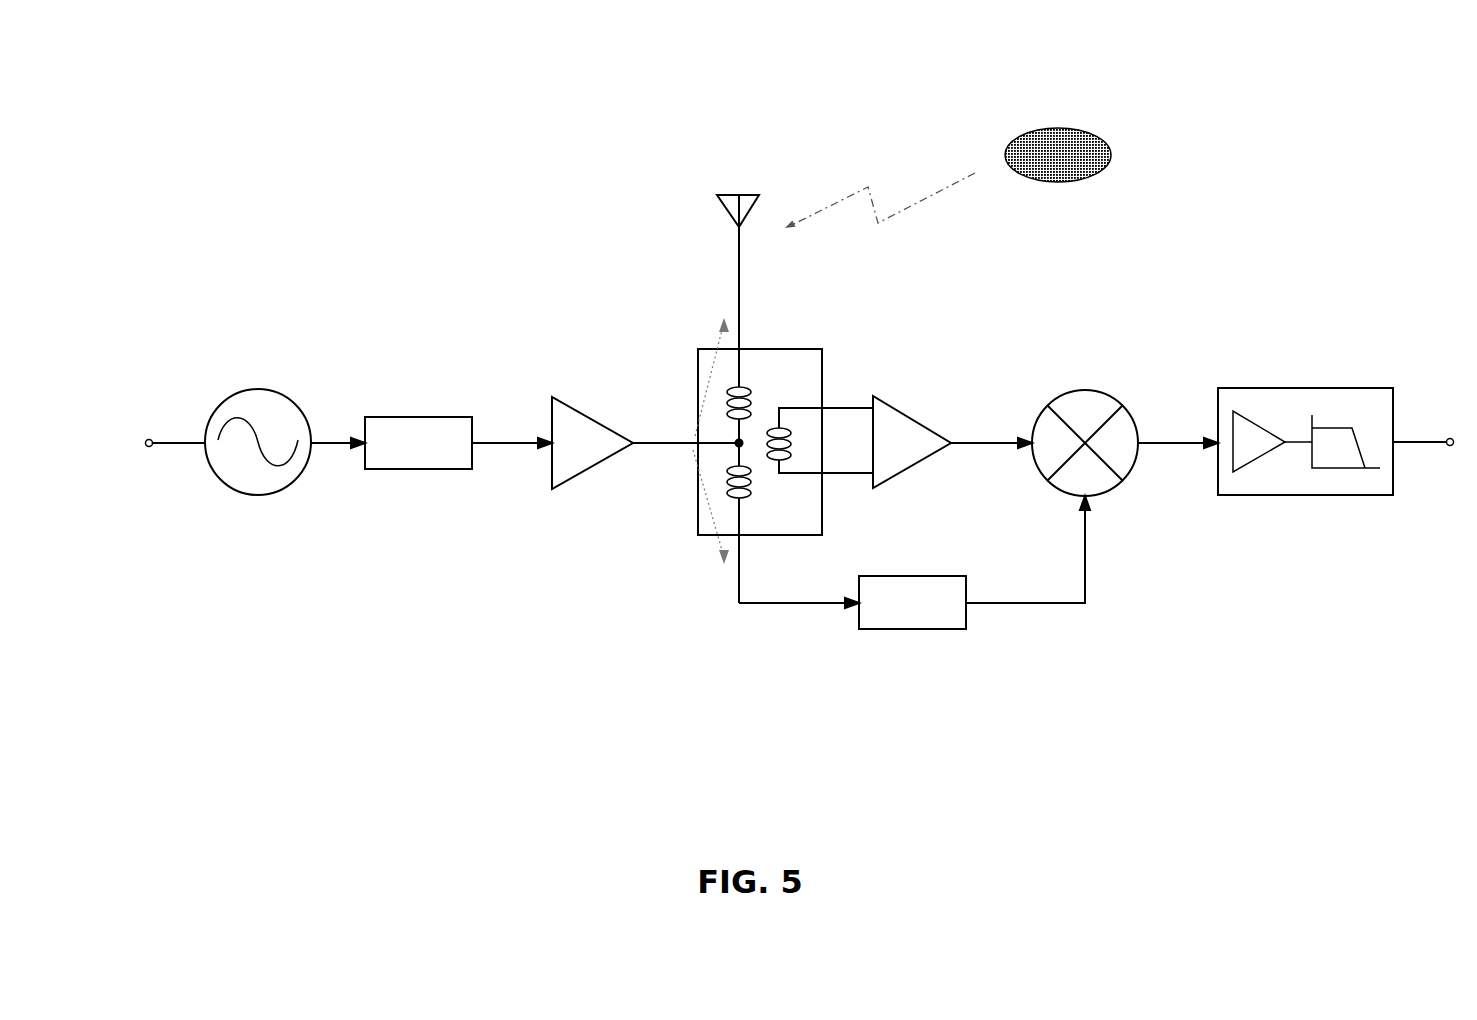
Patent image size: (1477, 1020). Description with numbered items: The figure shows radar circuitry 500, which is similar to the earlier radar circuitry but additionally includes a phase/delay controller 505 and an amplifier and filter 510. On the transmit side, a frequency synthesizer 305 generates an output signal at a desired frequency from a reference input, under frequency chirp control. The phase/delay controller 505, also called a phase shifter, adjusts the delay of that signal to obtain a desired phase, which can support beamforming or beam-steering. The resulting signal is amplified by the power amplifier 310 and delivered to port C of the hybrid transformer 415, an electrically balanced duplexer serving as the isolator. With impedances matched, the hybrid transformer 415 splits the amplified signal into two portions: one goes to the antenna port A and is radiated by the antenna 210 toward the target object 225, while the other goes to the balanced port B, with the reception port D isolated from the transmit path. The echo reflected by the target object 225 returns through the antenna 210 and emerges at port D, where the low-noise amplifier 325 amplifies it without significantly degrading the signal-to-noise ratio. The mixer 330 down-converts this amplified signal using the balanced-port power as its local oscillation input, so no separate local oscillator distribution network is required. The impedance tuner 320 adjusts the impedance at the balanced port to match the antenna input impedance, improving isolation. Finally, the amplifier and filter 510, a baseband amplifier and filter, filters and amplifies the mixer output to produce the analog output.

The radar circuitry 500 is at (1387, 84).
The antenna 210 is at (730, 258).
The target object 225 is at (948, 178).
The frequency synthesizer 305 is at (250, 495).
The phase/delay controller 505 is at (408, 470).
The power amplifier 310 is at (597, 466).
The hybrid transformer 415 is at (822, 365).
The low-noise amplifier 325 is at (893, 477).
The impedance tuner 320 is at (950, 576).
The mixer 330 is at (1117, 486).
The amplifier and filter 510 is at (1310, 495).